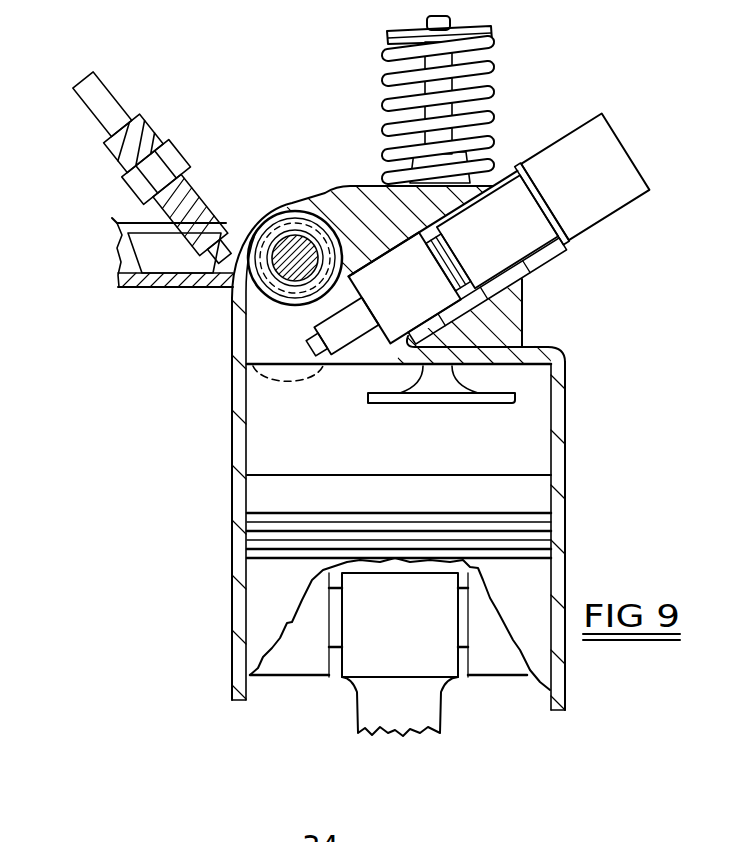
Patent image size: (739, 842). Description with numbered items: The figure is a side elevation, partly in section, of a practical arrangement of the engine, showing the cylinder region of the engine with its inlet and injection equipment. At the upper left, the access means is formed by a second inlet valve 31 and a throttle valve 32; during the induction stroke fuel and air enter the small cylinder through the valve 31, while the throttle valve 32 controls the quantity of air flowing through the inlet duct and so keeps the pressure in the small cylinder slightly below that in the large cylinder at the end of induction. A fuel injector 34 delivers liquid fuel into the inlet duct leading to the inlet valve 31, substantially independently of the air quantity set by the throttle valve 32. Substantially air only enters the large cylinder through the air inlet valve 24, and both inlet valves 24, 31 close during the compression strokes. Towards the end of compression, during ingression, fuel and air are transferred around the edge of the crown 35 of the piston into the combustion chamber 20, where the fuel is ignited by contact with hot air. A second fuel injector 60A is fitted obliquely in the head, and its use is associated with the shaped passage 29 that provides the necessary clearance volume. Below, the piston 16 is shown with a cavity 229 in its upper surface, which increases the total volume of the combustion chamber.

The piston 16 is at (262, 493).
The combustion chamber 20 is at (255, 227).
The air inlet valve 24 is at (505, 404).
The passage 29 is at (262, 333).
The second inlet valve 31 is at (290, 236).
The throttle valve 32 is at (122, 253).
The fuel injector 34 is at (118, 118).
The crown 35 is at (322, 233).
The fuel injector 60A is at (602, 207).
The cavity 229 is at (258, 382).